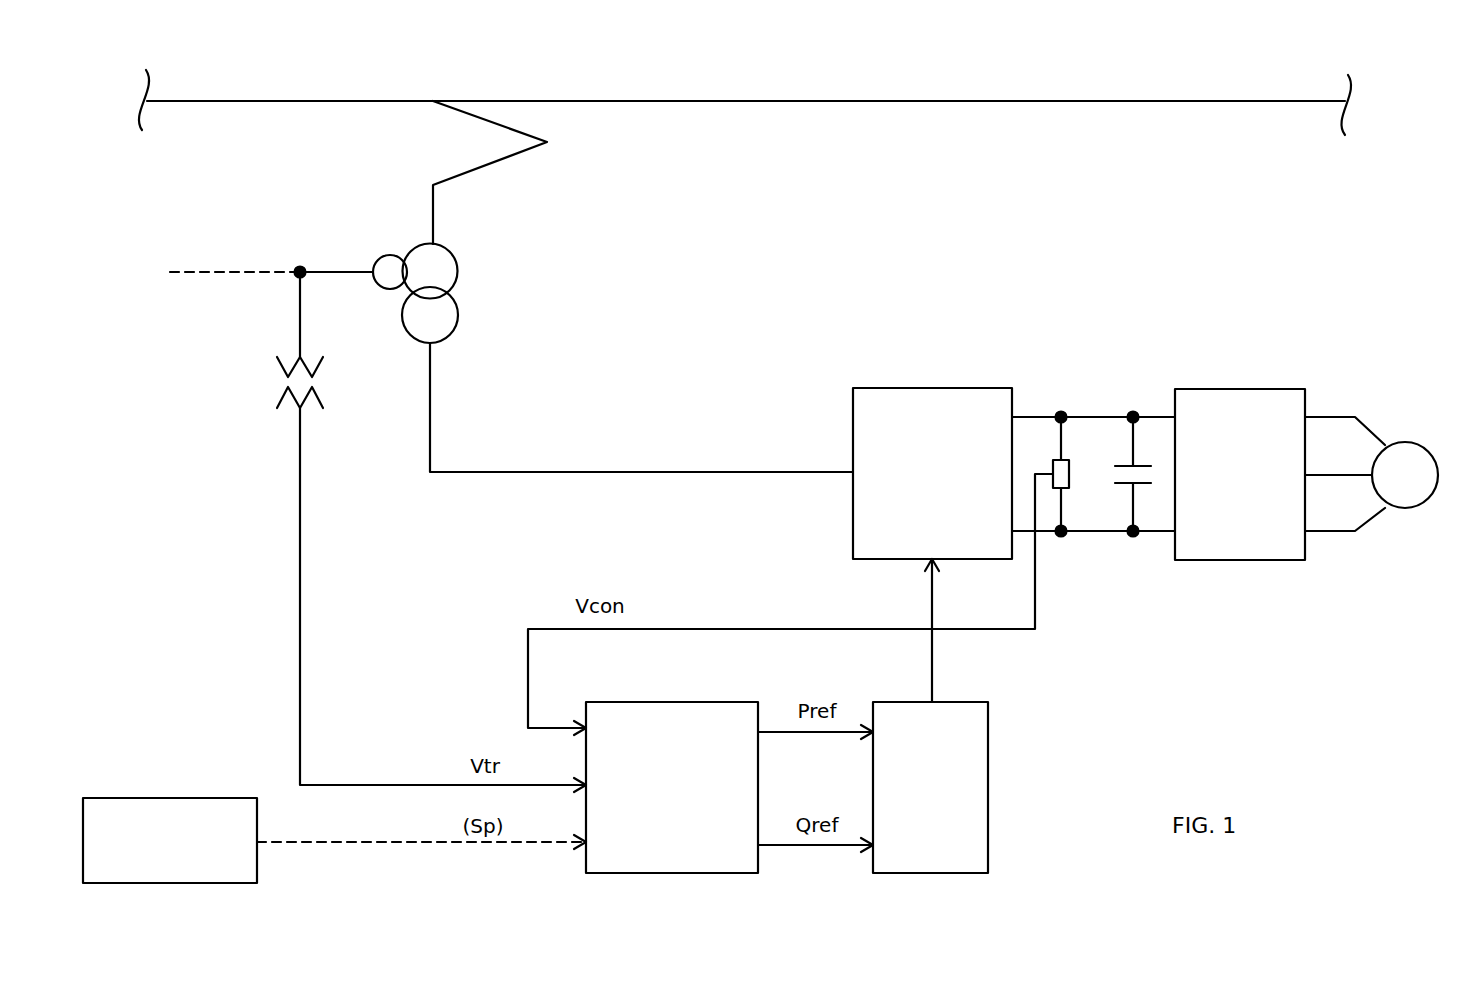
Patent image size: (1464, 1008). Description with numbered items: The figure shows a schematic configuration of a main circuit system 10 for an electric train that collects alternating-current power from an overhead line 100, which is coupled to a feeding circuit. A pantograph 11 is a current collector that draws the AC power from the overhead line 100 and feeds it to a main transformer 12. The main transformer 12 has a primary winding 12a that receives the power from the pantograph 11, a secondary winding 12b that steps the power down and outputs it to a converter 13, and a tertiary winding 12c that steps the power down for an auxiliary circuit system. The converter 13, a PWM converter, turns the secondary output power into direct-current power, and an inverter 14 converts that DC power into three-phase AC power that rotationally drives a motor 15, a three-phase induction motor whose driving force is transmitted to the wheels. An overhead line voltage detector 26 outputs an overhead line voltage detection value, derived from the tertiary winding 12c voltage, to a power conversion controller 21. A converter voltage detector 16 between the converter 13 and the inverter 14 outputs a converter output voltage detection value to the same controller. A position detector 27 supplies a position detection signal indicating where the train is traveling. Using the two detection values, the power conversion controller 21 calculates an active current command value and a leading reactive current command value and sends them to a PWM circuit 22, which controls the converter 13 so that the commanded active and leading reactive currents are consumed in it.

The overhead line 100 is at (1120, 101).
The pantograph 11 is at (490, 163).
The main transformer 12 is at (432, 285).
The primary winding 12a is at (456, 258).
The secondary winding 12b is at (456, 329).
The tertiary winding 12c is at (385, 256).
The overhead line voltage detector 26 is at (280, 384).
The converter 13 is at (960, 388).
The converter voltage detector 16 is at (1069, 470).
The inverter 14 is at (1257, 389).
The motor 15 is at (1405, 443).
The main circuit system 10 is at (1348, 275).
The power conversion controller 21 is at (700, 702).
The PWM circuit 22 is at (988, 745).
The position detector 27 is at (197, 798).